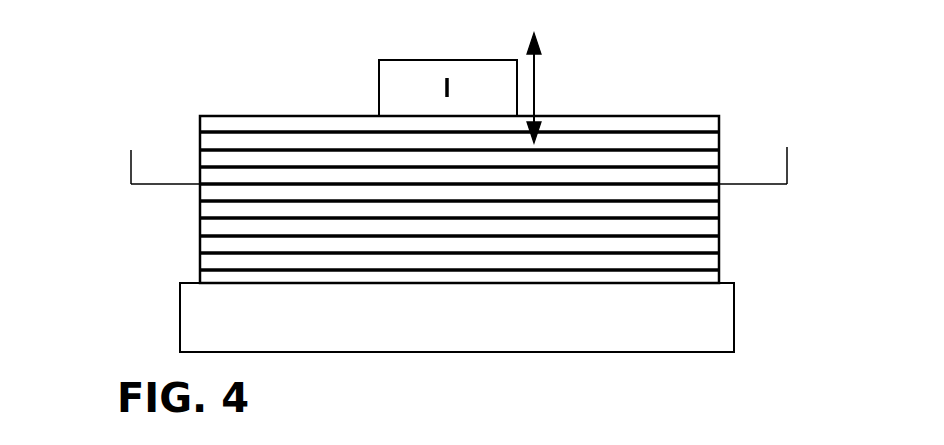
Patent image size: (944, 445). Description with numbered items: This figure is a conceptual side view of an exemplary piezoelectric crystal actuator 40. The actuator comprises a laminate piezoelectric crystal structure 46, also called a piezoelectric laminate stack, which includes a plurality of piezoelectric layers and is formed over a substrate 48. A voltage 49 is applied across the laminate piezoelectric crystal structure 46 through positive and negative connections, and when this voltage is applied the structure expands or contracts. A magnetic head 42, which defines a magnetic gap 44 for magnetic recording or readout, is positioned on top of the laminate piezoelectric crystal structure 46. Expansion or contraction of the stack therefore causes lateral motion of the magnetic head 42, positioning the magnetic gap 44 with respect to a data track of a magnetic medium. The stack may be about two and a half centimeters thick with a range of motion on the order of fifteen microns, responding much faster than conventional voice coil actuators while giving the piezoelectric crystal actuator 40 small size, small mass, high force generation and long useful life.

The piezoelectric crystal actuator 40 is at (678, 67).
The magnetic head 42 is at (379, 77).
The magnetic gap 44 is at (441, 85).
The laminate piezoelectric crystal structure 46 is at (722, 241).
The substrate 48 is at (672, 339).
The voltage 49 is at (118, 137).